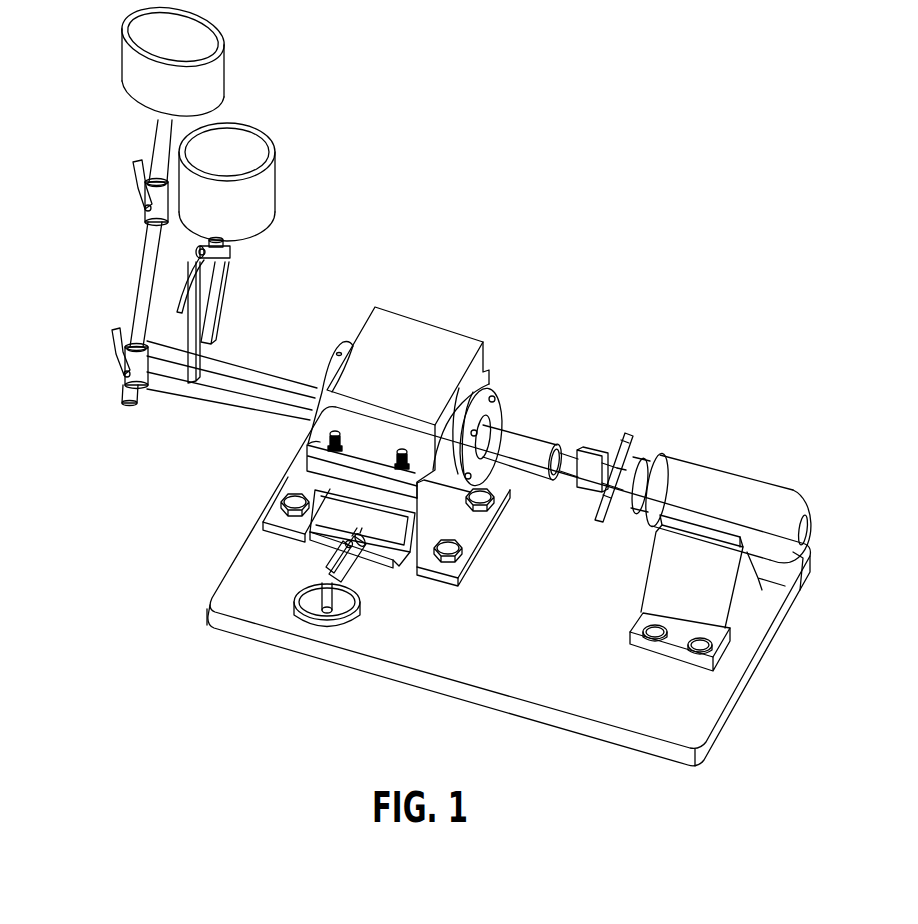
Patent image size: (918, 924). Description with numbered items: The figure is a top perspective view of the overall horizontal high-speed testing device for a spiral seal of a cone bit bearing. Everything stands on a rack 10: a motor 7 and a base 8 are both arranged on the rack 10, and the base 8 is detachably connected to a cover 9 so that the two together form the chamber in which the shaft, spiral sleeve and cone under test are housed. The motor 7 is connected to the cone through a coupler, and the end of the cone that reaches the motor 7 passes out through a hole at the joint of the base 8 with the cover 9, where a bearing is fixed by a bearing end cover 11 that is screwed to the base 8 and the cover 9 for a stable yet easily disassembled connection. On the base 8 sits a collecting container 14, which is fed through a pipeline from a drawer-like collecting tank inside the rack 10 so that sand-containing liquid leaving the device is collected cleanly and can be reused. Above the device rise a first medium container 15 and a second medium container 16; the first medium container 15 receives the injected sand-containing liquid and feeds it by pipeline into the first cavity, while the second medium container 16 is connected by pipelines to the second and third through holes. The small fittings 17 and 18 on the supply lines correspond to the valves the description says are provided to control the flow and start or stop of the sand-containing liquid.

The motor 7 is at (718, 497).
The base 8 is at (430, 510).
The cover 9 is at (397, 433).
The rack 10 is at (607, 678).
The bearing end cover 11 is at (487, 385).
The collecting container 14 is at (313, 605).
The first medium container 15 is at (143, 87).
The second medium container 16 is at (200, 202).
The valve 17 is at (145, 210).
The valve 18 is at (127, 373).